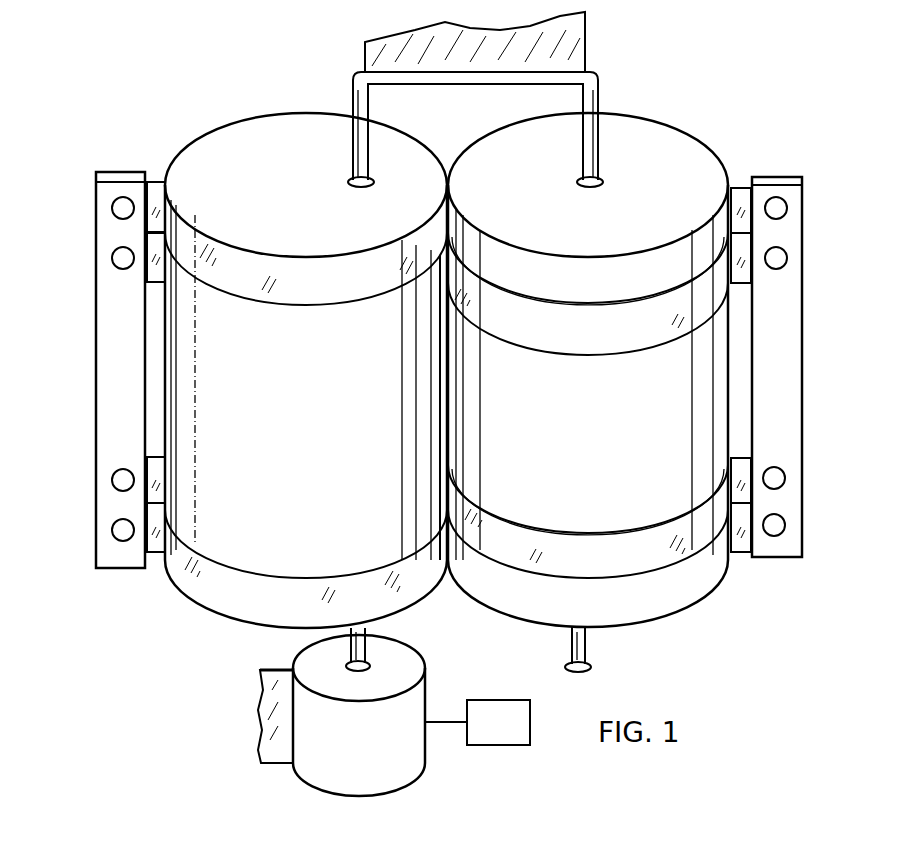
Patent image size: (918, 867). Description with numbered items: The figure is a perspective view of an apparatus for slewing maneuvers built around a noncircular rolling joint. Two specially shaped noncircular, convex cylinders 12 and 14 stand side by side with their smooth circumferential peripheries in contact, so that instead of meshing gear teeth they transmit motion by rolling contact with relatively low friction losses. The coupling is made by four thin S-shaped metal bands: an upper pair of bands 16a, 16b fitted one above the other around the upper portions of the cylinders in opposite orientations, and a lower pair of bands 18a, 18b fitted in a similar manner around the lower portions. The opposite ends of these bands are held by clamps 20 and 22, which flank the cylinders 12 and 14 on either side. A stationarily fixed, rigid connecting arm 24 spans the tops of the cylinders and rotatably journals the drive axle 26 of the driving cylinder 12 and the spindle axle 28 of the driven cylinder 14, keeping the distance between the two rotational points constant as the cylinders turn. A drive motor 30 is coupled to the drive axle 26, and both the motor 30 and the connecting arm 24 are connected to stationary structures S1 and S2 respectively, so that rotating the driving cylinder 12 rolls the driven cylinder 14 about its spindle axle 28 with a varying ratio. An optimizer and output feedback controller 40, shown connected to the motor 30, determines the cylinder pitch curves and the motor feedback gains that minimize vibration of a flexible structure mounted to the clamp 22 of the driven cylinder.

The noncircular cylinder 12 is at (320, 434).
The noncircular cylinder 14 is at (602, 426).
The upper band 16a is at (203, 247).
The upper band 16b is at (153, 272).
The lower band 18a is at (153, 473).
The lower band 18b is at (180, 567).
The clamp 20 is at (95, 378).
The clamp 22 is at (780, 407).
The connecting arm 24 is at (588, 70).
The drive axle 26 is at (366, 650).
The spindle axle 28 is at (597, 177).
The motor 30 is at (377, 761).
The optimizer and output feedback controller 40 is at (512, 735).
The stationary structure S1 is at (257, 755).
The stationary structure S2 is at (592, 34).